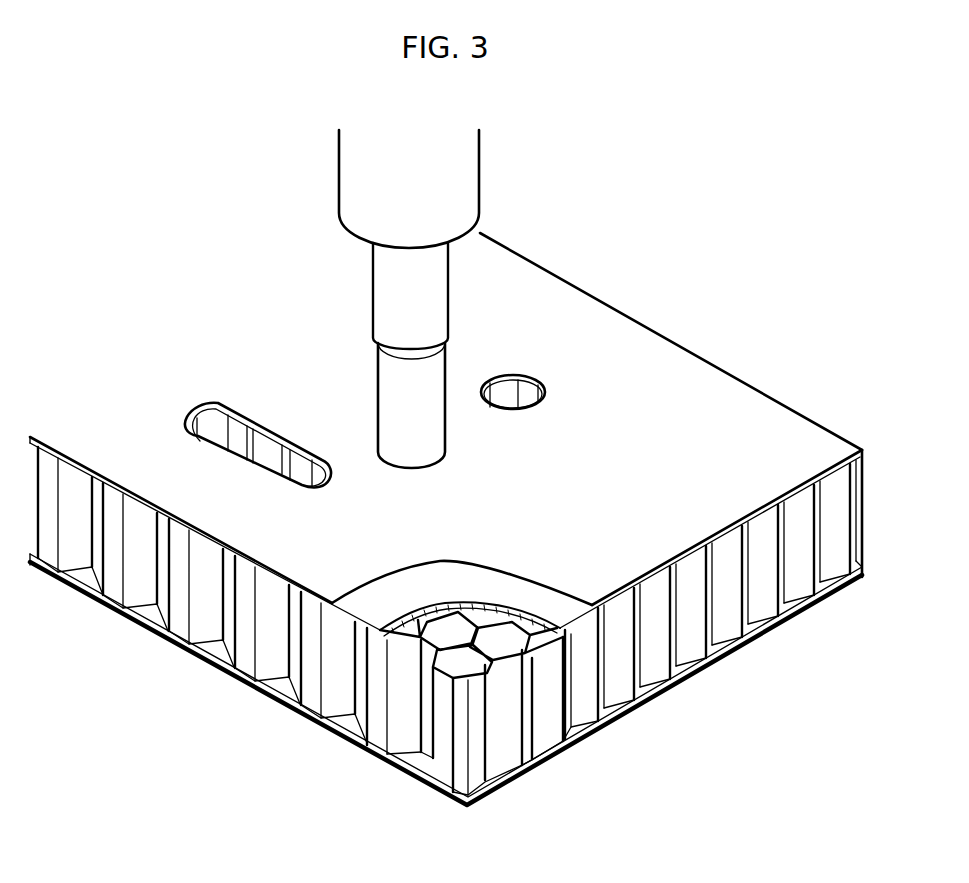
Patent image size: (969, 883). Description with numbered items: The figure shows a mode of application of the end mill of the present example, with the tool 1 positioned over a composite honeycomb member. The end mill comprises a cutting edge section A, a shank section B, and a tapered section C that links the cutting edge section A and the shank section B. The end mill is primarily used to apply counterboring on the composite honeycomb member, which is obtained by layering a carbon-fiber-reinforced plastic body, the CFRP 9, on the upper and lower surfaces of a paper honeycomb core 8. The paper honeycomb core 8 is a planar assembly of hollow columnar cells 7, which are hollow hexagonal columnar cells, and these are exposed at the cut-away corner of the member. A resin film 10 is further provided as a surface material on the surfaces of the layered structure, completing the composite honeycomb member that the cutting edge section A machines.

The tool 1 is at (402, 299).
The cutting edge section A is at (380, 413).
The shank section B is at (376, 291).
The tapered section C is at (392, 357).
The cells 7 is at (545, 733).
The paper honeycomb core 8 is at (405, 743).
The CFRP 9 is at (380, 608).
The resin film 10 is at (252, 533).